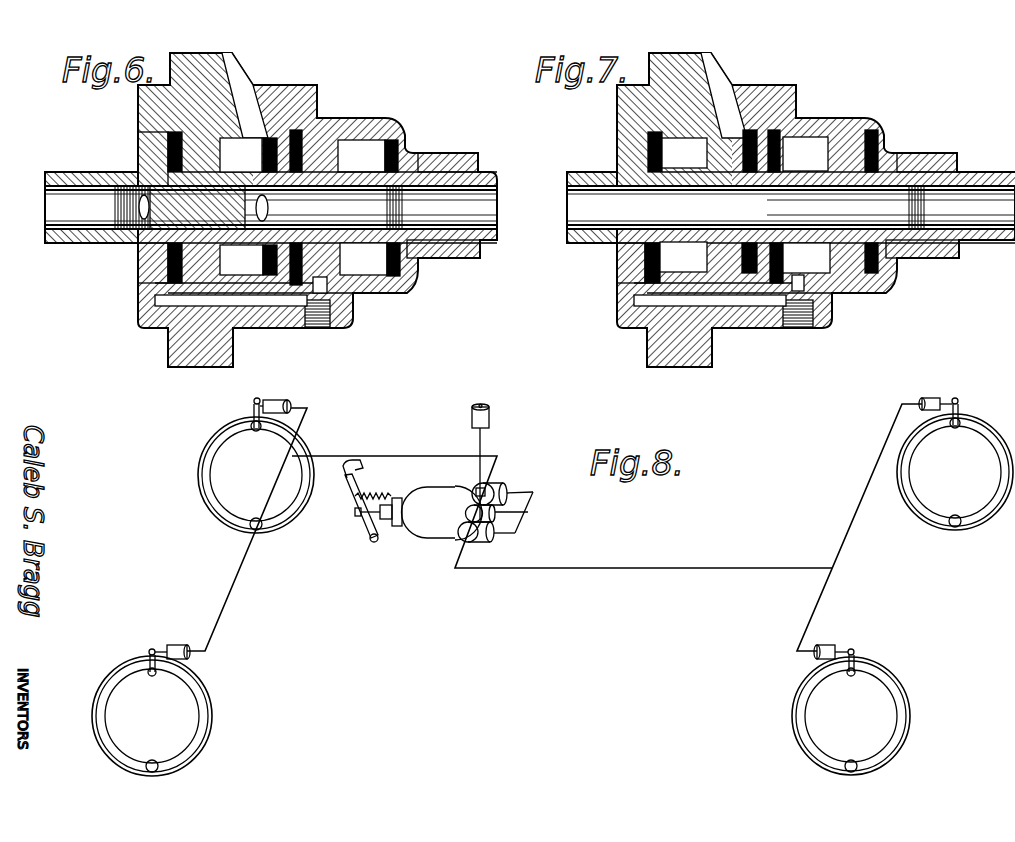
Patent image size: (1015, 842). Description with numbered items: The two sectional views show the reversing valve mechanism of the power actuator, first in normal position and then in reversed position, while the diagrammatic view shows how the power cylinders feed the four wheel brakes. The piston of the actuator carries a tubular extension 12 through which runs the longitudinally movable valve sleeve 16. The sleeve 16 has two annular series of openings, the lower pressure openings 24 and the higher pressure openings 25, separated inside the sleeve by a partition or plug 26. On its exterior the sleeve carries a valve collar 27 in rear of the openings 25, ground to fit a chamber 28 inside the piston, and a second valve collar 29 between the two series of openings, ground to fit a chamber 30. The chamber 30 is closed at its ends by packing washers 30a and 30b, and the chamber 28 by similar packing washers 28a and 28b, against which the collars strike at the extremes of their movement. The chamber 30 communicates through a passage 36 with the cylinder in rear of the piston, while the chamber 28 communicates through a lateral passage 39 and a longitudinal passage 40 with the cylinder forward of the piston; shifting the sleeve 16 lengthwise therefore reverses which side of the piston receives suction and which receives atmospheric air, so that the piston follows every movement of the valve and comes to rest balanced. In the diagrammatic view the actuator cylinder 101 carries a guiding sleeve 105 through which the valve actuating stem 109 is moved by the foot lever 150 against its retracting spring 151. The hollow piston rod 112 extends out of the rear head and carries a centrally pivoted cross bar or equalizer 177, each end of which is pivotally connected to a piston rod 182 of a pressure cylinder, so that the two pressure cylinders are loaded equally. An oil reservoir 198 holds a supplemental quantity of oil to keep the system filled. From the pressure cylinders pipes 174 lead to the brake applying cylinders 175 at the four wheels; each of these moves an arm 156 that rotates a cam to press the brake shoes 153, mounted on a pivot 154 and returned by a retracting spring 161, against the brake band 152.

In FIG. 6, the tubular extension 12 is at (450, 158).
In FIG. 7, the tubular extension 12 is at (927, 153).
In FIG. 6, the valve sleeve 16 is at (66, 240).
In FIG. 7, the valve sleeve 16 is at (791, 231).
In FIG. 6, the lower pressure openings 24 is at (143, 212).
In FIG. 7, the lower pressure openings 24 is at (692, 234).
In FIG. 6, the higher pressure openings 25 is at (248, 260).
In FIG. 7, the higher pressure openings 25 is at (786, 239).
In FIG. 6, the partition or plug 26 is at (248, 296).
In FIG. 7, the partition or plug 26 is at (816, 291).
In FIG. 6, the valve collar 27 is at (340, 138).
In FIG. 7, the valve collar 27 is at (791, 148).
In FIG. 6, the chamber 28 is at (370, 262).
In FIG. 7, the chamber 28 is at (849, 285).
In FIG. 6, the packing washer 28a is at (296, 290).
In FIG. 7, the packing washer 28a is at (788, 326).
In FIG. 6, the packing washer 28b is at (398, 270).
In FIG. 7, the packing washer 28b is at (921, 274).
In FIG. 6, the valve collar 29 is at (172, 136).
In FIG. 7, the valve collar 29 is at (684, 153).
In FIG. 6, the chamber 30 is at (241, 155).
In FIG. 7, the chamber 30 is at (627, 202).
In FIG. 6, the packing washer 30a is at (160, 164).
In FIG. 6, the packing washer 30b is at (299, 132).
In FIG. 7, the packing washer 30b is at (810, 130).
In FIG. 6, the passage 36 is at (248, 84).
In FIG. 7, the passage 36 is at (732, 92).
In FIG. 6, the lateral passage 39 is at (325, 292).
In FIG. 7, the lateral passage 39 is at (824, 314).
In FIG. 6, the longitudinal passage 40 is at (152, 300).
In FIG. 7, the longitudinal passage 40 is at (698, 329).
In FIG. 8, the power actuator cylinder 101 is at (445, 536).
In FIG. 8, the guiding sleeve 105 is at (399, 522).
In FIG. 8, the valve actuating stem 109 is at (372, 534).
In FIG. 8, the hollow piston rod 112 is at (510, 516).
In FIG. 8, the foot lever 150 is at (354, 512).
In FIG. 8, the retracting spring 151 is at (378, 494).
In FIG. 8, the brake band 152 is at (978, 527).
In FIG. 8, the brake shoes 153 is at (907, 478).
In FIG. 8, the pivot 154 is at (163, 769).
In FIG. 8, the arm 156 is at (150, 651).
In FIG. 8, the retracting spring 161 is at (151, 762).
In FIG. 8, the pipes 174 is at (393, 455).
In FIG. 8, the brake applying cylinders 175 is at (288, 404).
In FIG. 8, the cross bar or equalizer 177 is at (528, 503).
In FIG. 8, the piston rod 182 is at (508, 540).
In FIG. 8, the oil reservoir 198 is at (489, 416).